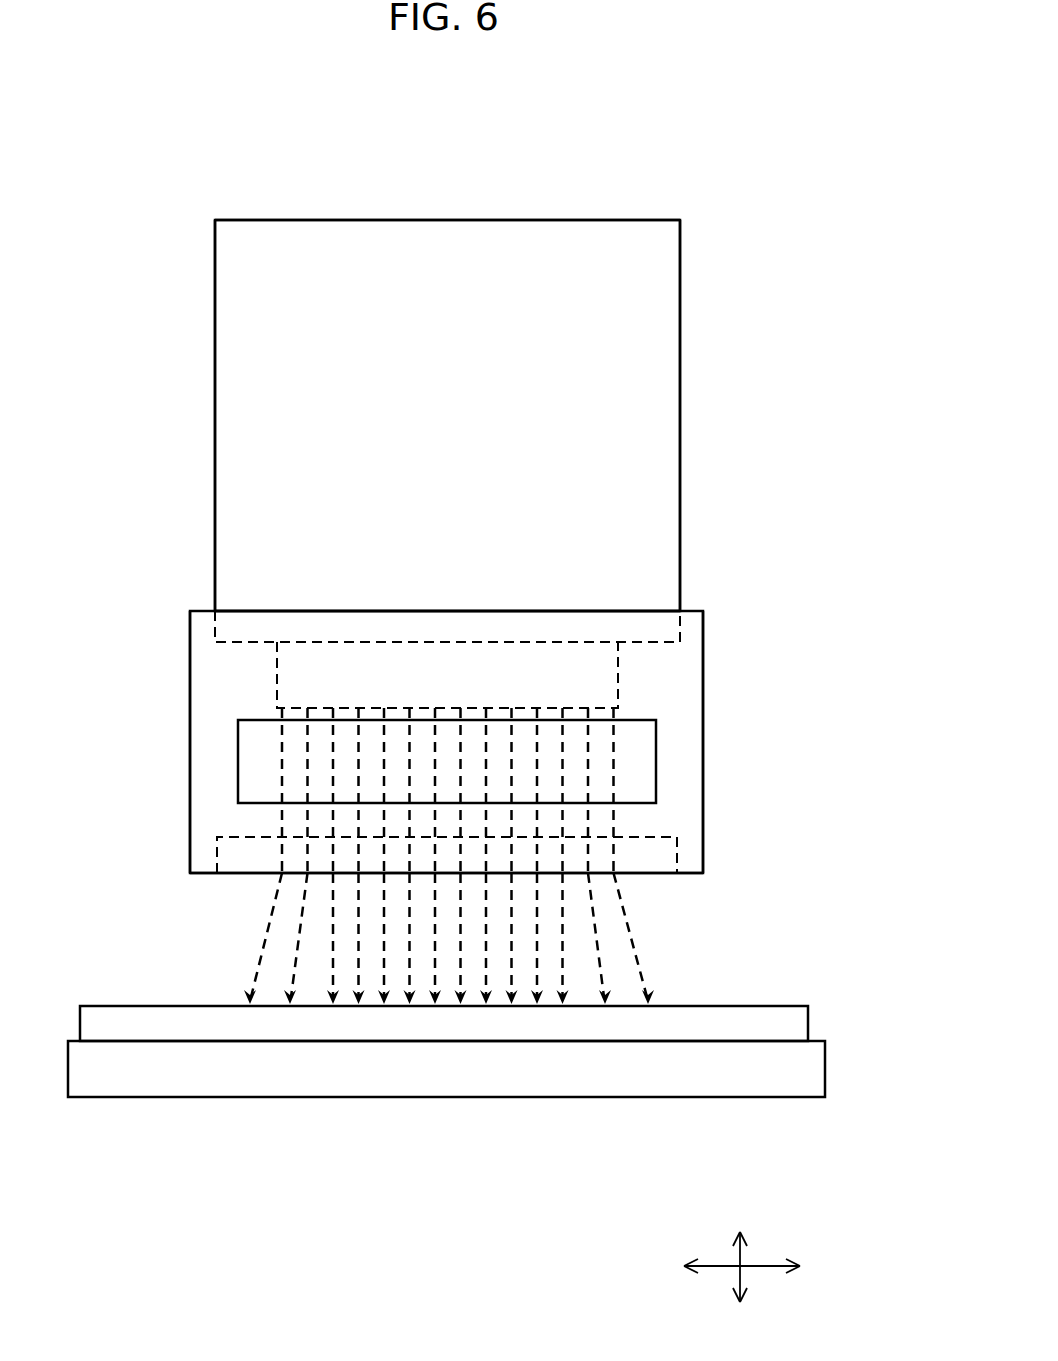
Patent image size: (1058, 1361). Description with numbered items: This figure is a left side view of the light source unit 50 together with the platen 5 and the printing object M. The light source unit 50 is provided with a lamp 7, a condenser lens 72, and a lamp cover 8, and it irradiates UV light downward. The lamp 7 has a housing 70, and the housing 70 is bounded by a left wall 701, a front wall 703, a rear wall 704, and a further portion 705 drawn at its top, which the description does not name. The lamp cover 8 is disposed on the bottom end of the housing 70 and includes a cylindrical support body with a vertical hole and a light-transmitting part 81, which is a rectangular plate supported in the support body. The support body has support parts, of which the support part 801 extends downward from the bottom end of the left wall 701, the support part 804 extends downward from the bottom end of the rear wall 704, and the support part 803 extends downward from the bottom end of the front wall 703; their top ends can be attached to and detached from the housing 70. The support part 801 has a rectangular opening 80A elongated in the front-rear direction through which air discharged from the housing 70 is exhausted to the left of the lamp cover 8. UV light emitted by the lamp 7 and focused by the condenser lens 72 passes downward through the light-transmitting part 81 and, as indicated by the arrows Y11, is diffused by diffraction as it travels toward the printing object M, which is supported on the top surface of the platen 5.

The light source unit 50 is at (732, 248).
The lamp 7 is at (205, 270).
The housing 70 is at (617, 340).
The left wall 701 is at (258, 492).
The front wall 703 is at (680, 400).
The rear wall 704 is at (215, 395).
The upper surface of head 705 is at (487, 220).
The lamp cover 8 is at (190, 660).
The support part 801 is at (222, 797).
The support part 803 is at (703, 810).
The support part 804 is at (190, 718).
The opening 80A is at (656, 757).
The condenser lens 72 is at (620, 676).
The light-transmitting part 81 is at (677, 855).
The arrows indicating UV light Y11 is at (628, 908).
The printing object M is at (798, 1006).
The platen 5 is at (805, 1070).